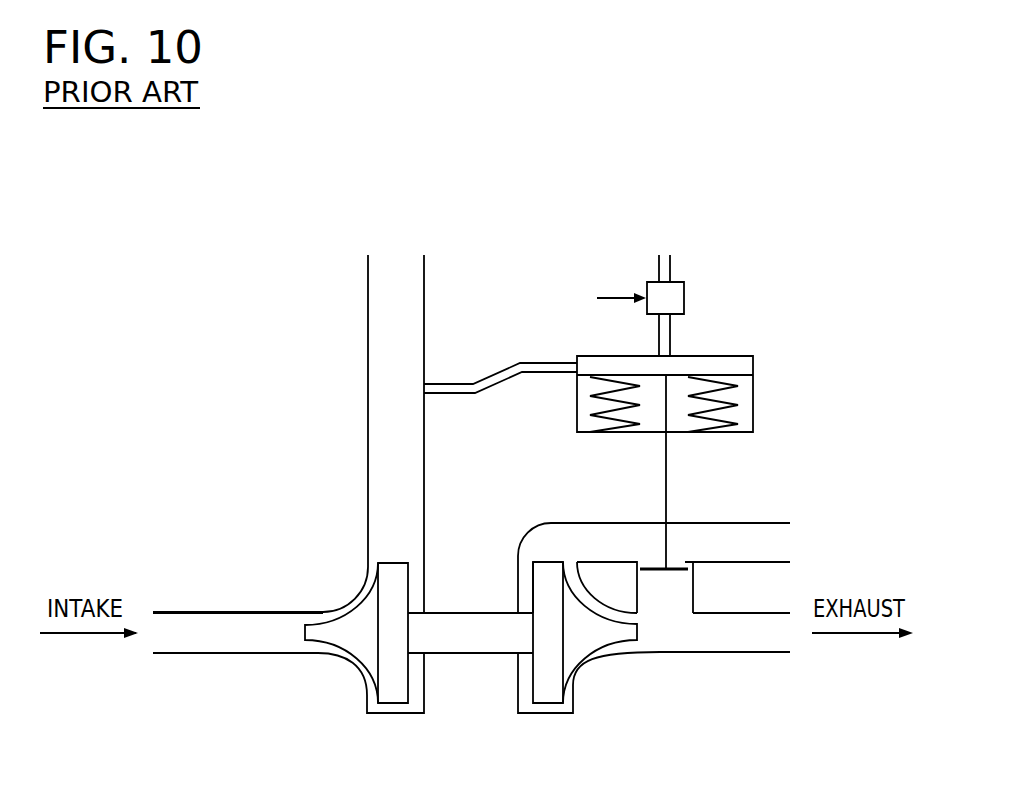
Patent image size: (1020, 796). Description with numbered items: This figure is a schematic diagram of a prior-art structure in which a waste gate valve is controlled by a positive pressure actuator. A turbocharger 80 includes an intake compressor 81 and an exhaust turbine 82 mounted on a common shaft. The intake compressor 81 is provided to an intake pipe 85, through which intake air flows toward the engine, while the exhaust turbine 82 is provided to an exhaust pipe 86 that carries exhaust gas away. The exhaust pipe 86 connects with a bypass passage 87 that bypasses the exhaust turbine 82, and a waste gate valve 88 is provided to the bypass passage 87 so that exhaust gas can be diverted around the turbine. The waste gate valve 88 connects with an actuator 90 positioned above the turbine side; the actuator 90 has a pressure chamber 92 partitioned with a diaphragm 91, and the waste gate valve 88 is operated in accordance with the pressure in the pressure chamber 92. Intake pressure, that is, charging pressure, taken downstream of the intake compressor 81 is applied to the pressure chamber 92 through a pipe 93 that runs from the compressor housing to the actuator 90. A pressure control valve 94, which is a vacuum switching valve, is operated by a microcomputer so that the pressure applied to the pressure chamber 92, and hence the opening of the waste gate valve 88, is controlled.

The turbocharger 80 is at (397, 703).
The intake compressor 81 is at (368, 678).
The exhaust turbine 82 is at (573, 680).
The intake pipe 85 is at (188, 653).
The exhaust pipe 86 is at (713, 653).
The bypass passage 87 is at (693, 585).
The waste gate valve 88 is at (675, 569).
The actuator 90 is at (644, 340).
The diaphragm 91 is at (745, 375).
The pressure chamber 92 is at (712, 360).
The pipe 93 is at (522, 364).
The pressure control valve 94 is at (684, 294).